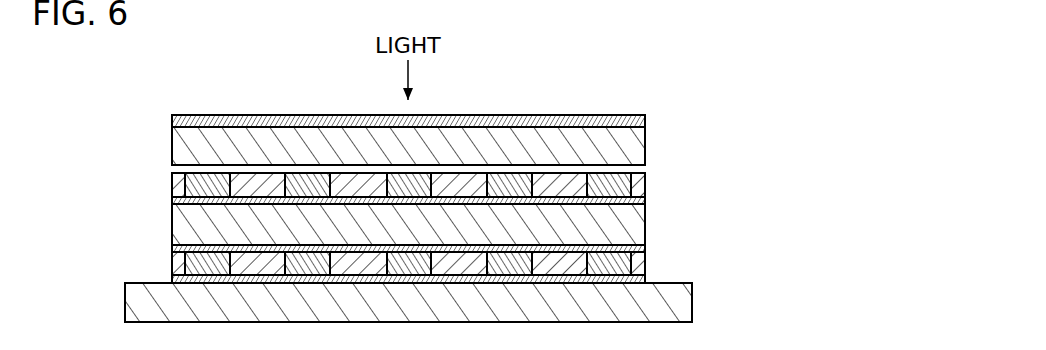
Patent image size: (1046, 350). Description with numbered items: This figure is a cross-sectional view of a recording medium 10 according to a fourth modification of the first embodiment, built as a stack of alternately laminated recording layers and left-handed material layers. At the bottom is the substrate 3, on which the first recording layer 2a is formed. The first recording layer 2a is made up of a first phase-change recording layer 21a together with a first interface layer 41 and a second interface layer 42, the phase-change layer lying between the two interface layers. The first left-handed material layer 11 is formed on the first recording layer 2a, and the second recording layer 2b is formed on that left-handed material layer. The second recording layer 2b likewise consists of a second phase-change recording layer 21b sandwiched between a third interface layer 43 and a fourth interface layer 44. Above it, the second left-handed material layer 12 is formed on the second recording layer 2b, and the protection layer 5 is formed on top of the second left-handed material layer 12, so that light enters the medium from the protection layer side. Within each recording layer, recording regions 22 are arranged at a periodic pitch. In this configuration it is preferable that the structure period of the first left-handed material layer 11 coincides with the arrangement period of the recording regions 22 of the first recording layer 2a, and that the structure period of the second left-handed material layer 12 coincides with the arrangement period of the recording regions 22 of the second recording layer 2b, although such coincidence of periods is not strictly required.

The recording medium 10 is at (460, 175).
The substrate 3 is at (681, 304).
The protection layer 5 is at (613, 126).
The first left-handed material layer 11 is at (645, 224).
The second left-handed material layer 12 is at (645, 143).
The first recording layer 2a is at (483, 244).
The second recording layer 2b is at (484, 159).
The first phase-change recording layer 21a is at (645, 266).
The second phase-change recording layer 21b is at (645, 178).
The recording regions 22 is at (510, 262).
The first interface layer 41 is at (645, 279).
The second interface layer 42 is at (645, 250).
The third interface layer 43 is at (645, 198).
The fourth interface layer 44 is at (645, 168).